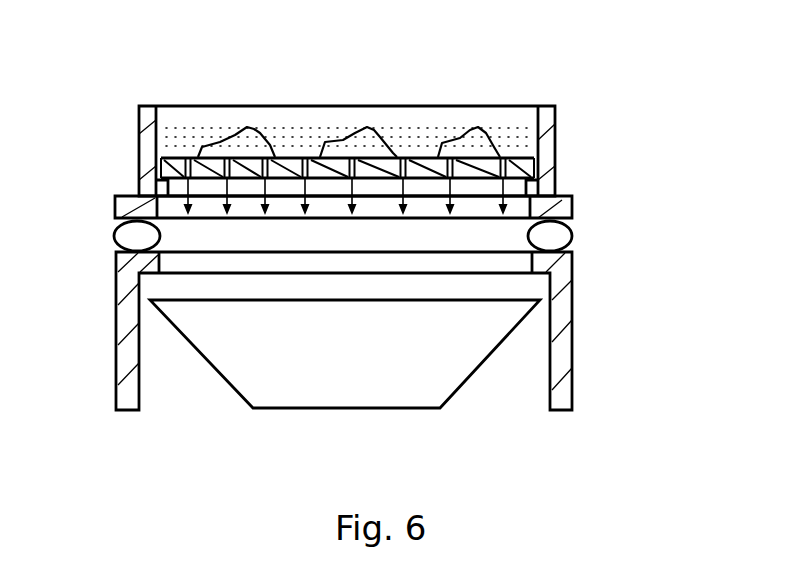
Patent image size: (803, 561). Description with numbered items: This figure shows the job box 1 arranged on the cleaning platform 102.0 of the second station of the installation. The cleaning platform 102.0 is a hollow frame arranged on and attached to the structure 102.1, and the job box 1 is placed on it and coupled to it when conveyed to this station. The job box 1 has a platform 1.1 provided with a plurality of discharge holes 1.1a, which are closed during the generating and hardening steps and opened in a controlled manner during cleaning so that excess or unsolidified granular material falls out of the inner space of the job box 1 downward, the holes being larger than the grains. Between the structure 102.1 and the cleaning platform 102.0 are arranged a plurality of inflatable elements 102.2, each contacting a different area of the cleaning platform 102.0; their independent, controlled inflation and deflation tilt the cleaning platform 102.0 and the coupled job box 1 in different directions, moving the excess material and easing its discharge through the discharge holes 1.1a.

The job box 1 is at (121, 151).
The platform 1.1 is at (330, 157).
The discharge holes 1.1a is at (417, 157).
The cleaning platform 102.0 is at (575, 212).
The inflatable elements 102.2 is at (552, 240).
The structure 102.1 is at (560, 353).